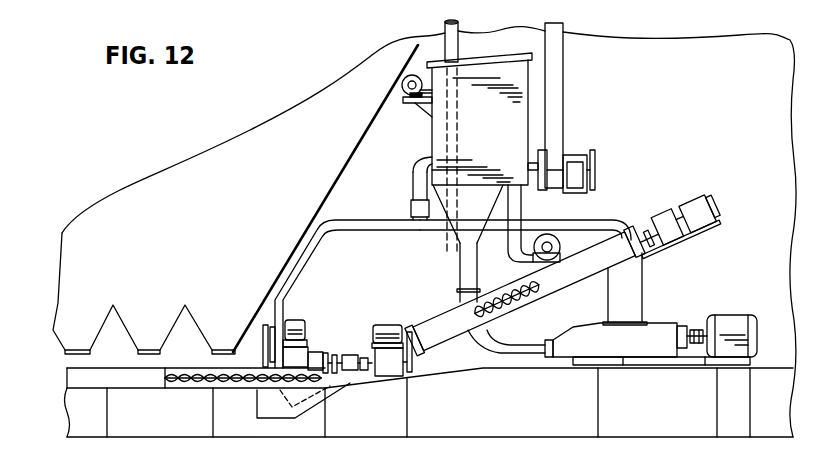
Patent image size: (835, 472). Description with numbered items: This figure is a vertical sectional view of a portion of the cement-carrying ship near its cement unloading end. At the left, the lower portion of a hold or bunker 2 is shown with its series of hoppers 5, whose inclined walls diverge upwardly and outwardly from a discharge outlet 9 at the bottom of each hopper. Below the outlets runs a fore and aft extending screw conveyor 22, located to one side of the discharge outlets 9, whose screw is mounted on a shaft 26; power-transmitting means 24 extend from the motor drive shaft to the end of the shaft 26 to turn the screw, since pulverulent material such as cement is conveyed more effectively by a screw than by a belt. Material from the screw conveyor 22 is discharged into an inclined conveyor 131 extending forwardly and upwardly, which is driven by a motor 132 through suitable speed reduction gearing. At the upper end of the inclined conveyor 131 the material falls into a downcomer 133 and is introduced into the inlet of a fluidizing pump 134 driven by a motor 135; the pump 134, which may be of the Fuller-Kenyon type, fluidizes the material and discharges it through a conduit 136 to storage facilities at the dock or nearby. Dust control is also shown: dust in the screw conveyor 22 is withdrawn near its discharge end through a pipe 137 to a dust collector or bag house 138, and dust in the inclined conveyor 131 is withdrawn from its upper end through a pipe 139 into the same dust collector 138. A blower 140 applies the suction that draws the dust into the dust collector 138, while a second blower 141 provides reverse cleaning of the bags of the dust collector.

The holds or bunkers 2 is at (83, 249).
The hoppers 5 is at (213, 337).
The discharge outlet 9 is at (153, 355).
The screw conveyors 22 is at (85, 381).
The power-transmitting means 24 is at (347, 353).
The shafts 26 is at (172, 389).
The inclined conveyor 131 is at (575, 282).
The motor 132 is at (695, 205).
The downcomer 133 is at (637, 298).
The fluidizing pump 134 is at (657, 333).
The motor 135 is at (740, 306).
The conduit 136 is at (488, 342).
The pipe 137 is at (312, 252).
The dust collector or bag house 138 is at (506, 131).
The pipe 139 is at (612, 224).
The blower 140 is at (557, 158).
The second blower 141 is at (403, 89).